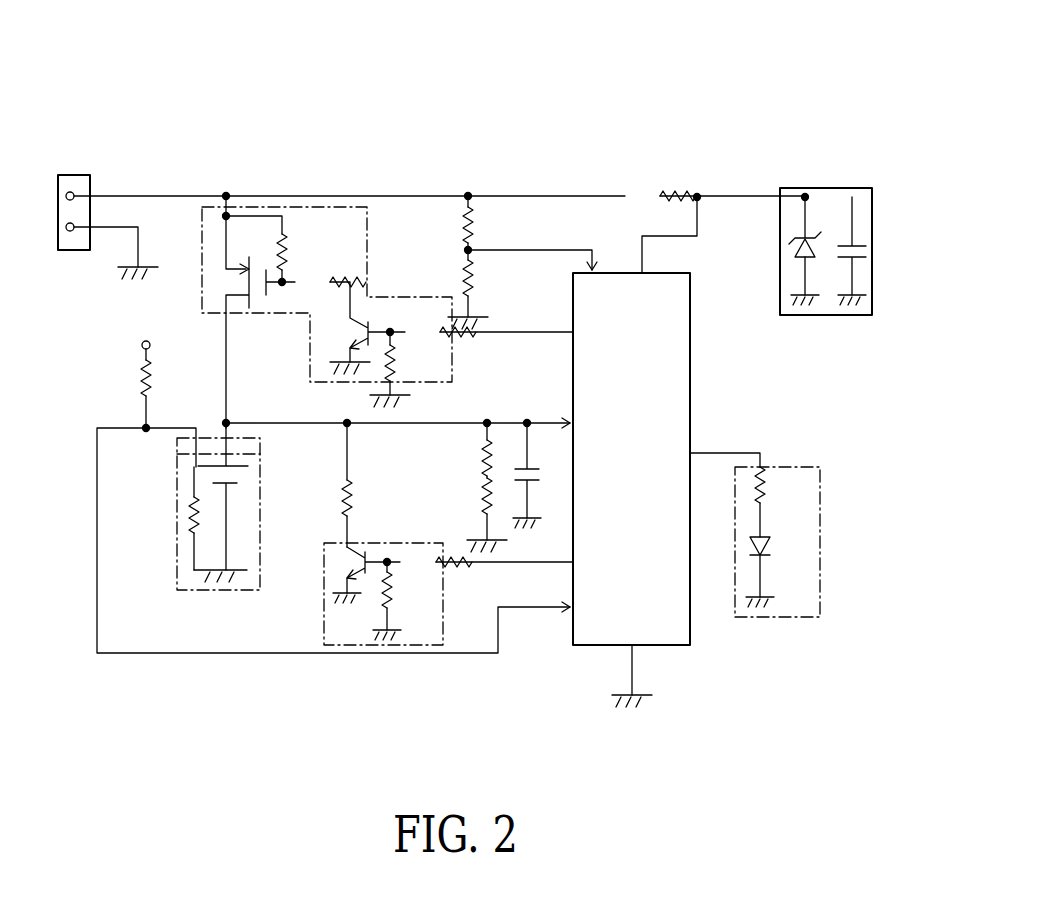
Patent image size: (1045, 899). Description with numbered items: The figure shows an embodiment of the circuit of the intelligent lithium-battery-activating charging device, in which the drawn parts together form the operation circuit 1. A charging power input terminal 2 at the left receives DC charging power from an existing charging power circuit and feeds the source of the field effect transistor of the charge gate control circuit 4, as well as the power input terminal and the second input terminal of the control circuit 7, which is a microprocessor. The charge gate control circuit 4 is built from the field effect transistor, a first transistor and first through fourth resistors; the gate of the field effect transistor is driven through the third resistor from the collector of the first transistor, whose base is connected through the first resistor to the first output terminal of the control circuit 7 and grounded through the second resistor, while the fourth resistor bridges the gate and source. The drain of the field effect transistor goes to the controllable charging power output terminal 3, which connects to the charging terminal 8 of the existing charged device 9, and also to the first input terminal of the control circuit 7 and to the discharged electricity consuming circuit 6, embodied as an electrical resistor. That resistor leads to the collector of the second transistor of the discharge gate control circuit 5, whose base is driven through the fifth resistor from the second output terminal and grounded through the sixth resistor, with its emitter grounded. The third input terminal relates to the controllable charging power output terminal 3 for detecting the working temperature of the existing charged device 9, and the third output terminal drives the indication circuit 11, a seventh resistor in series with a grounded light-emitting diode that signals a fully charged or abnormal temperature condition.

The operation circuit 1 is at (519, 140).
The charging power input terminal 2 is at (80, 183).
The controllable charging power output terminal 3 is at (185, 447).
The charge gate control circuit 4 is at (355, 265).
The discharge gate control circuit 5 is at (337, 618).
The discharged electricity consuming circuit 6 is at (357, 500).
The control circuit 7 is at (631, 490).
The charging terminal 8 is at (178, 522).
The existing charged device 9 is at (223, 487).
The indication circuit 11 is at (788, 571).